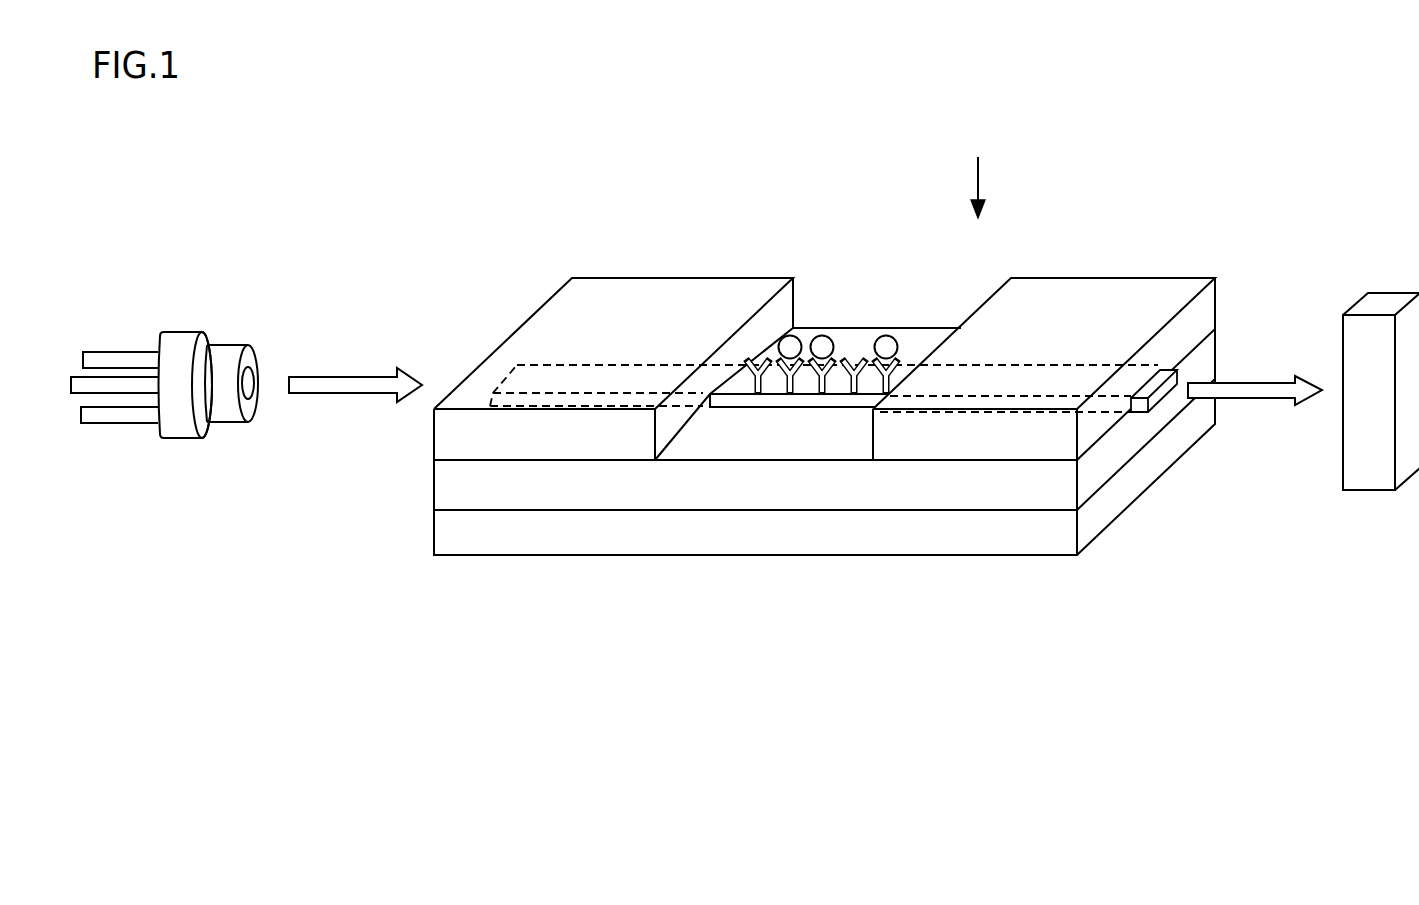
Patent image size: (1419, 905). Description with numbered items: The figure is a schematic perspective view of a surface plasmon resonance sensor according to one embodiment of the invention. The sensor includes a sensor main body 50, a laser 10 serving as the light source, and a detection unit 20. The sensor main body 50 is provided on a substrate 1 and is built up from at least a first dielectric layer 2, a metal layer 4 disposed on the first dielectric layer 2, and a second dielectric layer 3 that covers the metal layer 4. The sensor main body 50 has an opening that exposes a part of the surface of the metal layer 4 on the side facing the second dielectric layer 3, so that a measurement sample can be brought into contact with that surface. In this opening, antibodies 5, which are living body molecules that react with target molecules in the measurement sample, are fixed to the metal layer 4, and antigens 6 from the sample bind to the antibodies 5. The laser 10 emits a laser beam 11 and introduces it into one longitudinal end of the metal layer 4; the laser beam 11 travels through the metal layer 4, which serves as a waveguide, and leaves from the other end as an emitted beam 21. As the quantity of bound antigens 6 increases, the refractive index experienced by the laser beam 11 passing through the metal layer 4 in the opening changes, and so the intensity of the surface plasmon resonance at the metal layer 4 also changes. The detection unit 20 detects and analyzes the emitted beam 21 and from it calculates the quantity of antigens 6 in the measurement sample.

The substrate 1 is at (1147, 482).
The first dielectric layer 2 is at (1197, 369).
The second dielectric layer 3 is at (1197, 323).
The metal layer 4 is at (1155, 397).
The antibodies 5 is at (852, 372).
The antigens 6 is at (889, 343).
The laser 10 is at (177, 347).
The laser beam 11 is at (342, 395).
The detection unit 20 is at (1382, 300).
The emitted beam 21 is at (1268, 402).
The sensor main body 50 is at (978, 170).